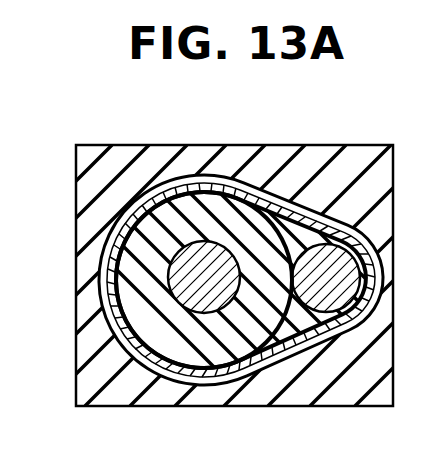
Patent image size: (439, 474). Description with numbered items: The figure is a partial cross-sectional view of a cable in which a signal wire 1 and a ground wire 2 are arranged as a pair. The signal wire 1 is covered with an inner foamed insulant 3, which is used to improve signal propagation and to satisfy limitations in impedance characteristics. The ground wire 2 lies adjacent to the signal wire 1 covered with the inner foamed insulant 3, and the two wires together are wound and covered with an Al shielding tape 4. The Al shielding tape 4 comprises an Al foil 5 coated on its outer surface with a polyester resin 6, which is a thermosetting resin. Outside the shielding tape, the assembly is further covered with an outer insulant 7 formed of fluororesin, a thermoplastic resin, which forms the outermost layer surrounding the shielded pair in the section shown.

The signal wire 1 is at (172, 291).
The ground wire 2 is at (311, 300).
The inner foamed insulant 3 is at (188, 350).
The Al shielding tape 4 is at (132, 108).
The Al foil 5 is at (160, 176).
The polyester resin 6 is at (188, 186).
The outer insulant 7 is at (82, 273).